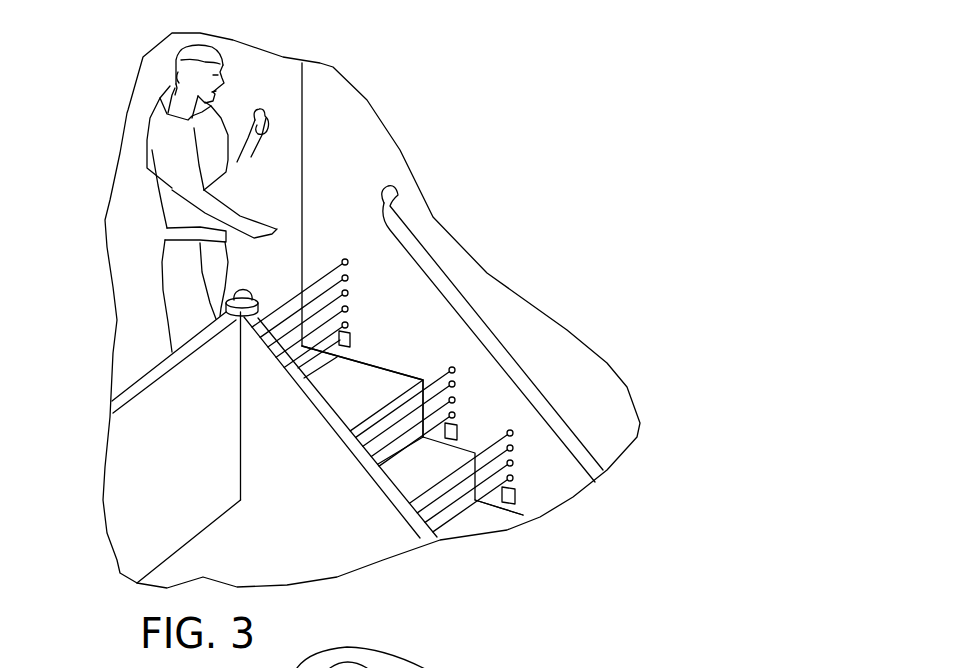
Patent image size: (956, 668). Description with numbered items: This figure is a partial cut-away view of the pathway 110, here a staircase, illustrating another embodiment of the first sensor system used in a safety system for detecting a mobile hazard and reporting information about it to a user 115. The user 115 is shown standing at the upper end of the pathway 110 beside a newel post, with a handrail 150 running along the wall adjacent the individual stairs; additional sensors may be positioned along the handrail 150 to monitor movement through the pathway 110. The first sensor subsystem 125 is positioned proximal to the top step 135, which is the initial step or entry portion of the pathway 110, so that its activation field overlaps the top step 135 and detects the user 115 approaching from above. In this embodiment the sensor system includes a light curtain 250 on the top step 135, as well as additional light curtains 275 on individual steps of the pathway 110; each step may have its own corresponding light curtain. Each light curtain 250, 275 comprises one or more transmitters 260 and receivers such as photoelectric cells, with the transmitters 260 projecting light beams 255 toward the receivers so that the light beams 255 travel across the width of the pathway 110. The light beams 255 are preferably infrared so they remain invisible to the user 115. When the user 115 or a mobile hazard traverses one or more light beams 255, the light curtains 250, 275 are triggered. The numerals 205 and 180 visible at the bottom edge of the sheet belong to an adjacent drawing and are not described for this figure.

The user 115 is at (148, 136).
The light beams 255 is at (288, 320).
The transmitters 260 is at (349, 293).
The light curtain 250 is at (353, 311).
The first sensor subsystem 125 is at (348, 343).
The top step 135 is at (365, 388).
The additional light curtains 275 is at (463, 396).
The handrail 150 is at (447, 282).
The pathway 110 is at (538, 484).
The partial element of adjacent figure 205 is at (404, 657).
The partial element of adjacent figure 180 is at (446, 655).